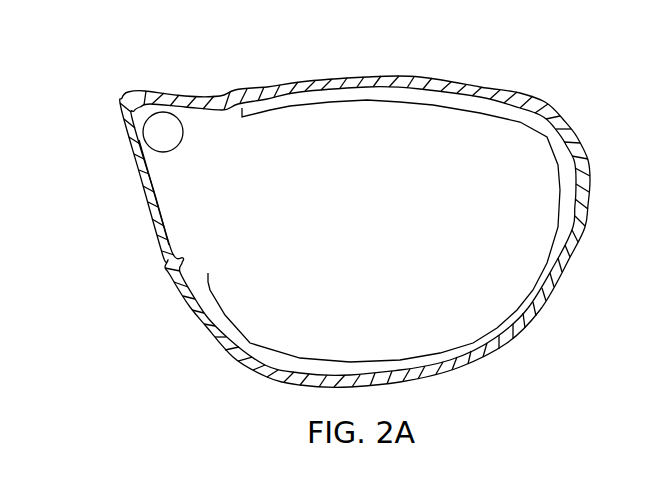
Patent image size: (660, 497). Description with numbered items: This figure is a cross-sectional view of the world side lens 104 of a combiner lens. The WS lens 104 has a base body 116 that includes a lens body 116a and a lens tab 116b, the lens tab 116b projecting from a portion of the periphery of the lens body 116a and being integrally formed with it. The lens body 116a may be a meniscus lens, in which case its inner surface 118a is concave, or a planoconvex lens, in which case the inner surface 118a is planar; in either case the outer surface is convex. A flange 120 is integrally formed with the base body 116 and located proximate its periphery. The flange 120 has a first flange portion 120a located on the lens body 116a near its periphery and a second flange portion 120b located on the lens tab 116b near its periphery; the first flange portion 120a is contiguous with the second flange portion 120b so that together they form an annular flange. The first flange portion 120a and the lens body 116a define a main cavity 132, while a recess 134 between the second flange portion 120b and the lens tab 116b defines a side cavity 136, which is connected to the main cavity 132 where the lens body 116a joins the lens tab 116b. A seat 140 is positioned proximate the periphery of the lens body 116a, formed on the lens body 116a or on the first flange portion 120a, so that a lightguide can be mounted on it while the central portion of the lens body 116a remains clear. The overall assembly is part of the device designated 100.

The golf club head 100 is at (349, 256).
The world side lens 104 is at (247, 367).
The base body 116 is at (517, 317).
The lens body 116a is at (443, 345).
The lens tab 116b is at (167, 208).
The inner surface 118a is at (507, 265).
The flange 120 is at (252, 88).
The first flange portion 120a is at (373, 77).
The second flange portion 120b is at (130, 152).
The main cavity 132 is at (487, 127).
The recess 134 is at (123, 110).
The side cavity 136 is at (160, 178).
The seat 140 is at (542, 125).